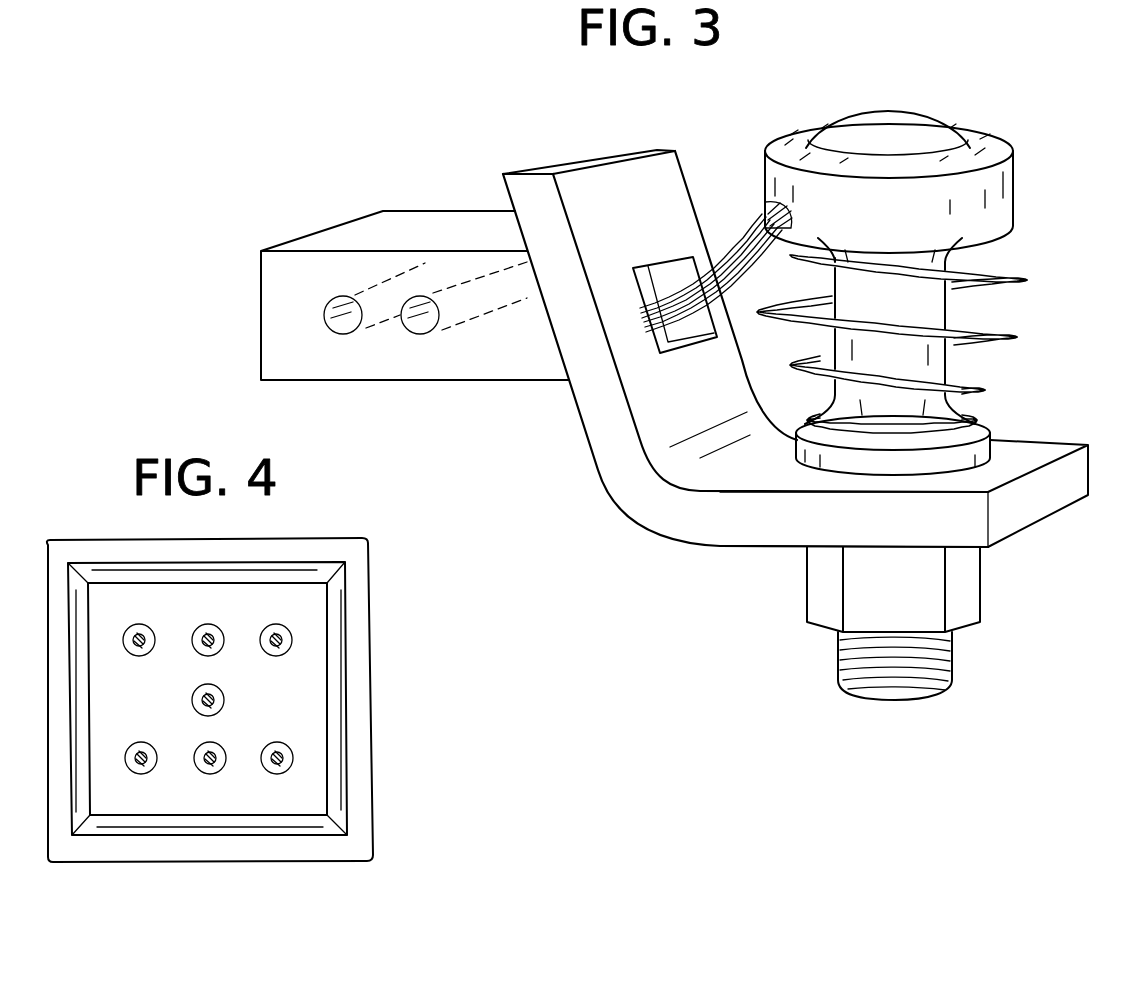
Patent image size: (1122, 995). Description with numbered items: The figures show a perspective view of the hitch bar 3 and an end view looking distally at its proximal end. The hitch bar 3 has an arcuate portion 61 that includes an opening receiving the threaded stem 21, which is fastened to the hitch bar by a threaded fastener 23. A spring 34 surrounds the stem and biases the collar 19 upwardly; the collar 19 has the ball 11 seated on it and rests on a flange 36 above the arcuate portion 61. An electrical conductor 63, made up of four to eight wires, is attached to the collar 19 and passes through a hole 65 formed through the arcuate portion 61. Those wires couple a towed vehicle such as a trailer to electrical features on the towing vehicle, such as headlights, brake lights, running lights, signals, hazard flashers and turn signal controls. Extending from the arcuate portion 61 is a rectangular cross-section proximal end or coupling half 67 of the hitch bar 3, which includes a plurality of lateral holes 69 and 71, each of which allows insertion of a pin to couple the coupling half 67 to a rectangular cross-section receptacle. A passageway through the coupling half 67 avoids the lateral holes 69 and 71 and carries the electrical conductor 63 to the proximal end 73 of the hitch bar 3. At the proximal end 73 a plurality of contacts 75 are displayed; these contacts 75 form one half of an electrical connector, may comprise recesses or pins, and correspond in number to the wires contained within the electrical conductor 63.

In FIG. 3, the hitch bar 3 is at (827, 518).
In FIG. 3, the ball 11 is at (928, 118).
In FIG. 3, the collar 19 is at (998, 213).
In FIG. 3, the threaded stem 21 is at (953, 668).
In FIG. 3, the threaded fastener 23 is at (967, 592).
In FIG. 3, the spring 34 is at (1020, 299).
In FIG. 3, the flange 36 is at (990, 437).
In FIG. 3, the arcuate portion 61 is at (626, 506).
In FIG. 3, the electrical conductor 63 is at (730, 251).
In FIG. 3, the hole 65 is at (648, 352).
In FIG. 3, the proximal end or coupling half 67 is at (371, 230).
In FIG. 3, the lateral hole 69 is at (345, 334).
In FIG. 3, the lateral hole 71 is at (422, 334).
In FIG. 3, the proximal end 73 is at (258, 297).
In FIG. 4, the proximal end 73 is at (426, 820).
In FIG. 4, the contacts 75 is at (222, 773).